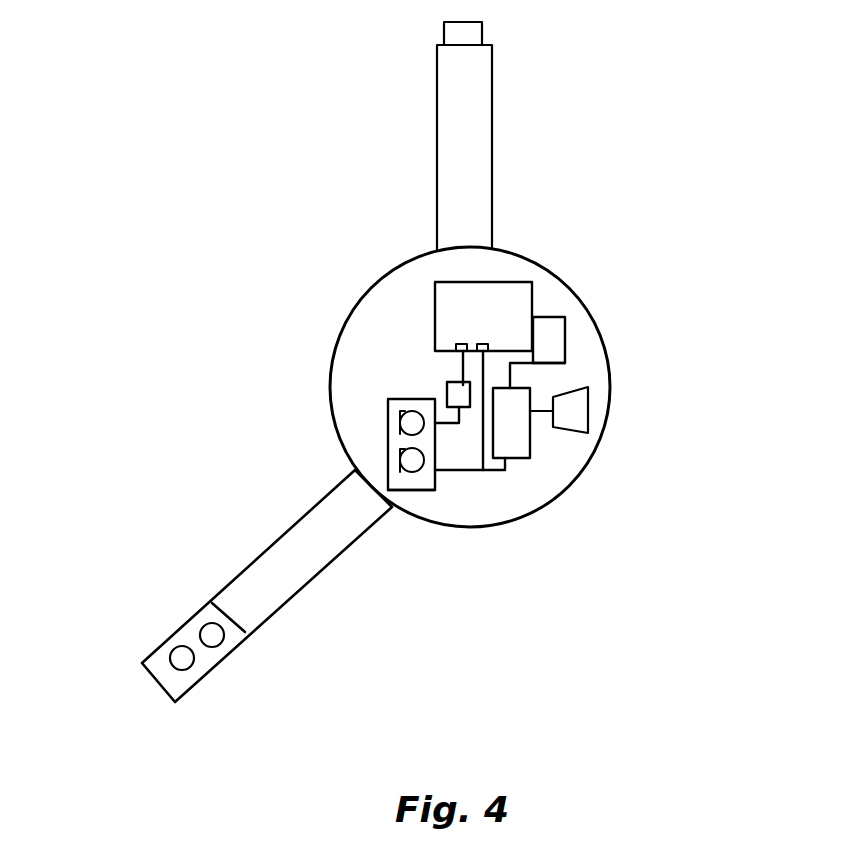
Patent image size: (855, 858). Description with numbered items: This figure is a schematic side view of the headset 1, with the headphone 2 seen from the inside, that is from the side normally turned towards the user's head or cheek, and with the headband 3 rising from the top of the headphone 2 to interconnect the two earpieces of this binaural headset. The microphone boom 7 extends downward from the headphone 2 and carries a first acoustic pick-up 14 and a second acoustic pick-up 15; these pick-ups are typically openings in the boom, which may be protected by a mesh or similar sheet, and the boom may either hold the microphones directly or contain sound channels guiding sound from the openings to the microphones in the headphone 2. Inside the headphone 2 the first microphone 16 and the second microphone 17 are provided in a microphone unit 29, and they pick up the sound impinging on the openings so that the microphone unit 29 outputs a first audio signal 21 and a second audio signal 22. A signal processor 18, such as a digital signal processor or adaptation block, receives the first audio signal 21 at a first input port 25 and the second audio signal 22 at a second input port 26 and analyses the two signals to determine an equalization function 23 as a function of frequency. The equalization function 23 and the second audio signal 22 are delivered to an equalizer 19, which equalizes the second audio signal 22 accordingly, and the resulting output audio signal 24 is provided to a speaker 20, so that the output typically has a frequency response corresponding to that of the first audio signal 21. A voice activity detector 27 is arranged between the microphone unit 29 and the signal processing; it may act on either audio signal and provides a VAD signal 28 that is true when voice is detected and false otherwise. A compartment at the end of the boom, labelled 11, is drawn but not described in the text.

The headset 1 is at (251, 194).
The headphone 2 is at (412, 252).
The headband 3 is at (485, 148).
The microphone boom 7 is at (237, 573).
The battery compartment 11 is at (162, 668).
The first acoustic pick-up 14 is at (192, 668).
The second acoustic pick-up 15 is at (222, 643).
The first microphone 16 is at (390, 419).
The second microphone 17 is at (398, 490).
The signal processor 18 is at (433, 307).
The equalizer 19 is at (517, 460).
The speaker 20 is at (570, 432).
The first audio signal 21 is at (463, 369).
The second audio signal 22 is at (460, 472).
The equalization function 23 is at (565, 338).
The output audio signal 24 is at (542, 413).
The first input port 25 is at (463, 343).
The second input port 26 is at (483, 347).
The voice activity detector 27 is at (447, 393).
The VAD signal 28 is at (470, 369).
The microphone unit 29 is at (387, 466).